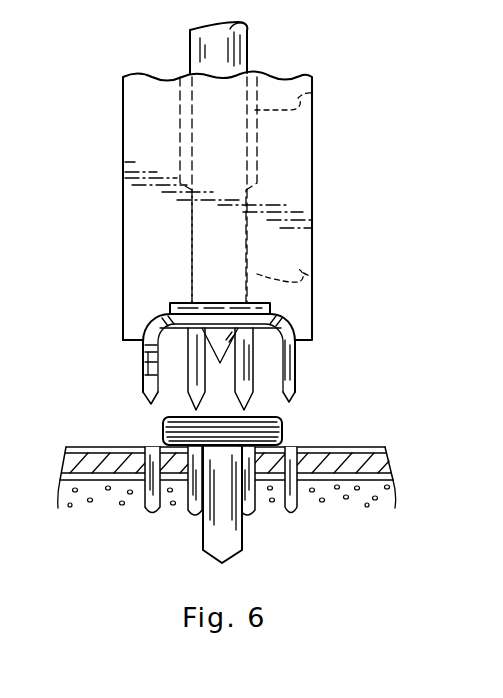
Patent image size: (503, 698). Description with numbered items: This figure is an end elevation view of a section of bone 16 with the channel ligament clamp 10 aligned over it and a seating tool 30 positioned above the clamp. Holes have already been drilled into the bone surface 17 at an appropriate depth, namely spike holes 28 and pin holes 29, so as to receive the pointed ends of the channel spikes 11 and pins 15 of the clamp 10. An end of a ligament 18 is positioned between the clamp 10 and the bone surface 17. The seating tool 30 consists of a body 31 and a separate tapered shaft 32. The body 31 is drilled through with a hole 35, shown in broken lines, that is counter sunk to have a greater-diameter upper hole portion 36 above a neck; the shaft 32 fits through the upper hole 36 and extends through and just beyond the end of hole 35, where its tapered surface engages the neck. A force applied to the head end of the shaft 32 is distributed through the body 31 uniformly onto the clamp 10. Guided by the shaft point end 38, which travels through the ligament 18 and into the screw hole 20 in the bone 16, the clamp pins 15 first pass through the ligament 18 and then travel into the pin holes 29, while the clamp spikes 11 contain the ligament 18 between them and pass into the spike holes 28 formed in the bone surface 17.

The channel ligament clamp 10 is at (239, 360).
The channel spikes 11 is at (145, 360).
The pins 15 is at (193, 372).
The bone 16 is at (322, 574).
The bone surface 17 is at (343, 447).
The ligament 18 is at (282, 425).
The screw hole 20 is at (208, 552).
The spike holes 28 is at (145, 503).
The pin holes 29 is at (193, 510).
The seating tool 30 is at (288, 178).
The seating tool body 31 is at (300, 130).
The tapered shaft 32 is at (238, 50).
The hole 35 is at (312, 276).
The upper hole portion 36 is at (312, 93).
The shaft point end 38 is at (143, 322).